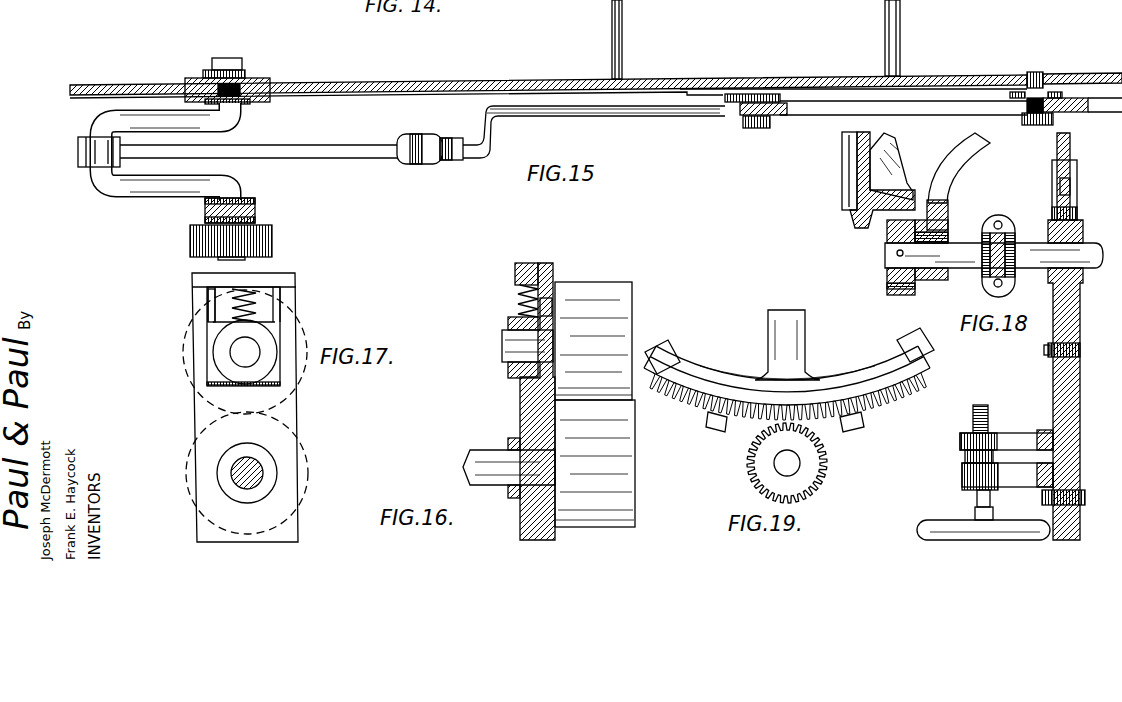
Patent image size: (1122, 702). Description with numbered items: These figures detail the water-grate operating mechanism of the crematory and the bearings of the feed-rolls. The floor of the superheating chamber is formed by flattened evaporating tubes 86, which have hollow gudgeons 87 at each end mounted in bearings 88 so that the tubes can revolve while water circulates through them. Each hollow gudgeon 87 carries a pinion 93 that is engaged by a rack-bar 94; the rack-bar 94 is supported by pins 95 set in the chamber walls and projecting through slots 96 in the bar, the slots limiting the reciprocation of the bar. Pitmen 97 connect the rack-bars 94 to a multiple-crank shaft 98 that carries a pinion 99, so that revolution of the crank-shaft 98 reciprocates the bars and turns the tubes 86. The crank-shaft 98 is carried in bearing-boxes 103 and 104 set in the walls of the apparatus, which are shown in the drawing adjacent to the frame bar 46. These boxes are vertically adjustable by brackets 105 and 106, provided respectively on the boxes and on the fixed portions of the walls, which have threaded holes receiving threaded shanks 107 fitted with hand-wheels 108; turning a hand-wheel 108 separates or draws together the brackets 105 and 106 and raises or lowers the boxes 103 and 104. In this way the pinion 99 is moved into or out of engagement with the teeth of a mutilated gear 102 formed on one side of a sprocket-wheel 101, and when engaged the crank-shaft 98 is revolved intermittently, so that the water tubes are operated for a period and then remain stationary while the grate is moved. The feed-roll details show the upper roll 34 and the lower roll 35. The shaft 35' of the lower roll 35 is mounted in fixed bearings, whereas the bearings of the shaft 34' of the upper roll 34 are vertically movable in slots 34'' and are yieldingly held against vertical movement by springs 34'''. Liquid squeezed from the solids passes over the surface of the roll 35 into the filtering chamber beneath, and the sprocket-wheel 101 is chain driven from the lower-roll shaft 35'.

In FIG. 15, the frame bar 46 is at (345, 83).
In FIG. 18, the frame bar 46 is at (1072, 152).
In FIG. 15, the flattened evaporating tubes 86 is at (818, 39).
In FIG. 15, the bearing-box 103 is at (246, 80).
In FIG. 15, the multiple-crank shaft 98 is at (155, 186).
In FIG. 19, the multiple-crank shaft 98 is at (774, 466).
In FIG. 15, the pitmen 97 is at (323, 148).
In FIG. 18, the pitmen 97 is at (1022, 212).
In FIG. 15, the pinion 99 is at (272, 240).
In FIG. 18, the pinion 99 is at (907, 287).
In FIG. 19, the pinion 99 is at (812, 465).
In FIG. 15, the rack-bars 94 is at (697, 108).
In FIG. 15, the bearings 88 is at (758, 97).
In FIG. 15, the hollow gudgeons 87 is at (760, 130).
In FIG. 15, the slots 96 is at (837, 107).
In FIG. 15, the pins 95 is at (1020, 115).
In FIG. 15, the pinions 93 is at (1093, 107).
In FIG. 18, the pinions 93 is at (1077, 245).
In FIG. 18, the sprocket-wheel 101 is at (853, 177).
In FIG. 19, the sprocket-wheel 101 is at (917, 353).
In FIG. 18, the mutilated gear 102 is at (903, 187).
In FIG. 19, the mutilated gear 102 is at (878, 403).
In FIG. 18, the bearing-box 104 is at (1072, 310).
In FIG. 18, the bracket 105 is at (1018, 443).
In FIG. 18, the bracket 106 is at (1032, 470).
In FIG. 18, the threaded shanks 107 is at (985, 396).
In FIG. 18, the hand-wheels 108 is at (942, 528).
In FIG. 16, the upper roll 34 is at (616, 341).
In FIG. 17, the upper roll 34 is at (284, 352).
In FIG. 16, the shaft of the upper roll 34' is at (506, 346).
In FIG. 17, the shaft of the upper roll 34' is at (295, 338).
In FIG. 16, the slots 34'' is at (581, 282).
In FIG. 17, the slots 34'' is at (174, 305).
In FIG. 16, the springs 34''' is at (499, 301).
In FIG. 17, the springs 34''' is at (297, 301).
In FIG. 16, the lower roll 35 is at (610, 463).
In FIG. 17, the lower roll 35 is at (267, 473).
In FIG. 16, the shaft of the lower roll 35' is at (502, 453).
In FIG. 17, the shaft of the lower roll 35' is at (293, 453).